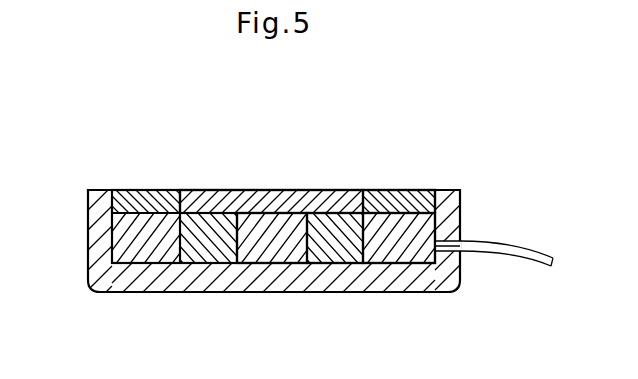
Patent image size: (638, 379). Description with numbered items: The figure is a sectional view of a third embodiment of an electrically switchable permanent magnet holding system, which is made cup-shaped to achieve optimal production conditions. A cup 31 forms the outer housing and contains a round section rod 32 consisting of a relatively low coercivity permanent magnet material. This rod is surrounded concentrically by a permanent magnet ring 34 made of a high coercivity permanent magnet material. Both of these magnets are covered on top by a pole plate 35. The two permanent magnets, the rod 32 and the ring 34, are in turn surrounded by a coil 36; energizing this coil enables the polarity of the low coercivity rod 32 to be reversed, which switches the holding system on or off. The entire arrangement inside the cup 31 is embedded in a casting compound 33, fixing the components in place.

The cup 31 is at (229, 278).
The round section rod 32 is at (296, 250).
The casting compound 33 is at (410, 200).
The permanent magnet ring 34 is at (352, 250).
The pole plate 35 is at (339, 200).
The coil 36 is at (408, 250).